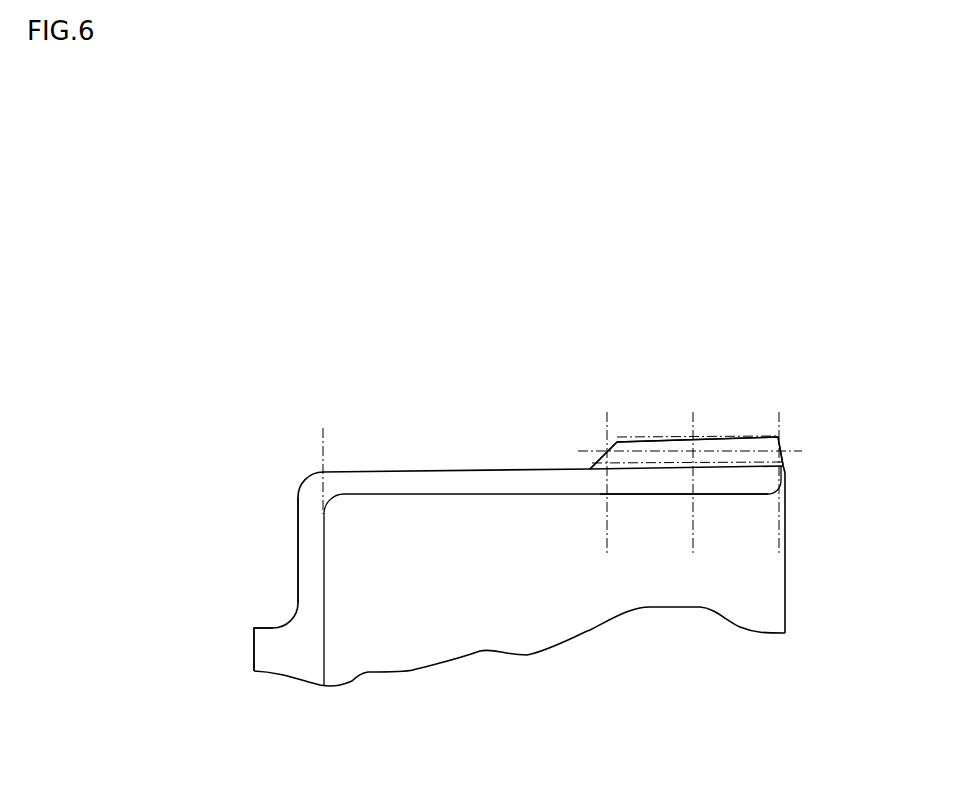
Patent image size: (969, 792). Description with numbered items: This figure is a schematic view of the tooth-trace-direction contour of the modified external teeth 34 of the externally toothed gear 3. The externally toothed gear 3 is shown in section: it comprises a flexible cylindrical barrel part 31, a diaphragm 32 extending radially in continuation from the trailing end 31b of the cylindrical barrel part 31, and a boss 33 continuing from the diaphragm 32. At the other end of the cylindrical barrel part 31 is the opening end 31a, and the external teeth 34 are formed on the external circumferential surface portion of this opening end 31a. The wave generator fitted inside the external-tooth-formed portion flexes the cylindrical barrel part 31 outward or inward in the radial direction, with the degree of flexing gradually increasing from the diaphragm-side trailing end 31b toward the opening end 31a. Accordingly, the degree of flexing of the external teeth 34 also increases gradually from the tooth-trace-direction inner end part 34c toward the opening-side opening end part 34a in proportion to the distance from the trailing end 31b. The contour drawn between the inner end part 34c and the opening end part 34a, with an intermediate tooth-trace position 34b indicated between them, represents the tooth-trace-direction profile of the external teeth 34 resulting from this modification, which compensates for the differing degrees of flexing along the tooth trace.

The externally toothed gear 3 is at (263, 431).
The cylindrical barrel part 31 is at (458, 467).
The opening end 31a is at (785, 483).
The trailing end 31b is at (323, 471).
The diaphragm 32 is at (284, 546).
The boss 33 is at (270, 649).
The external teeth 34 is at (727, 436).
The opening end part 34a is at (778, 437).
The top face of protruding portion 34b is at (693, 437).
The inner end part 34c is at (617, 441).